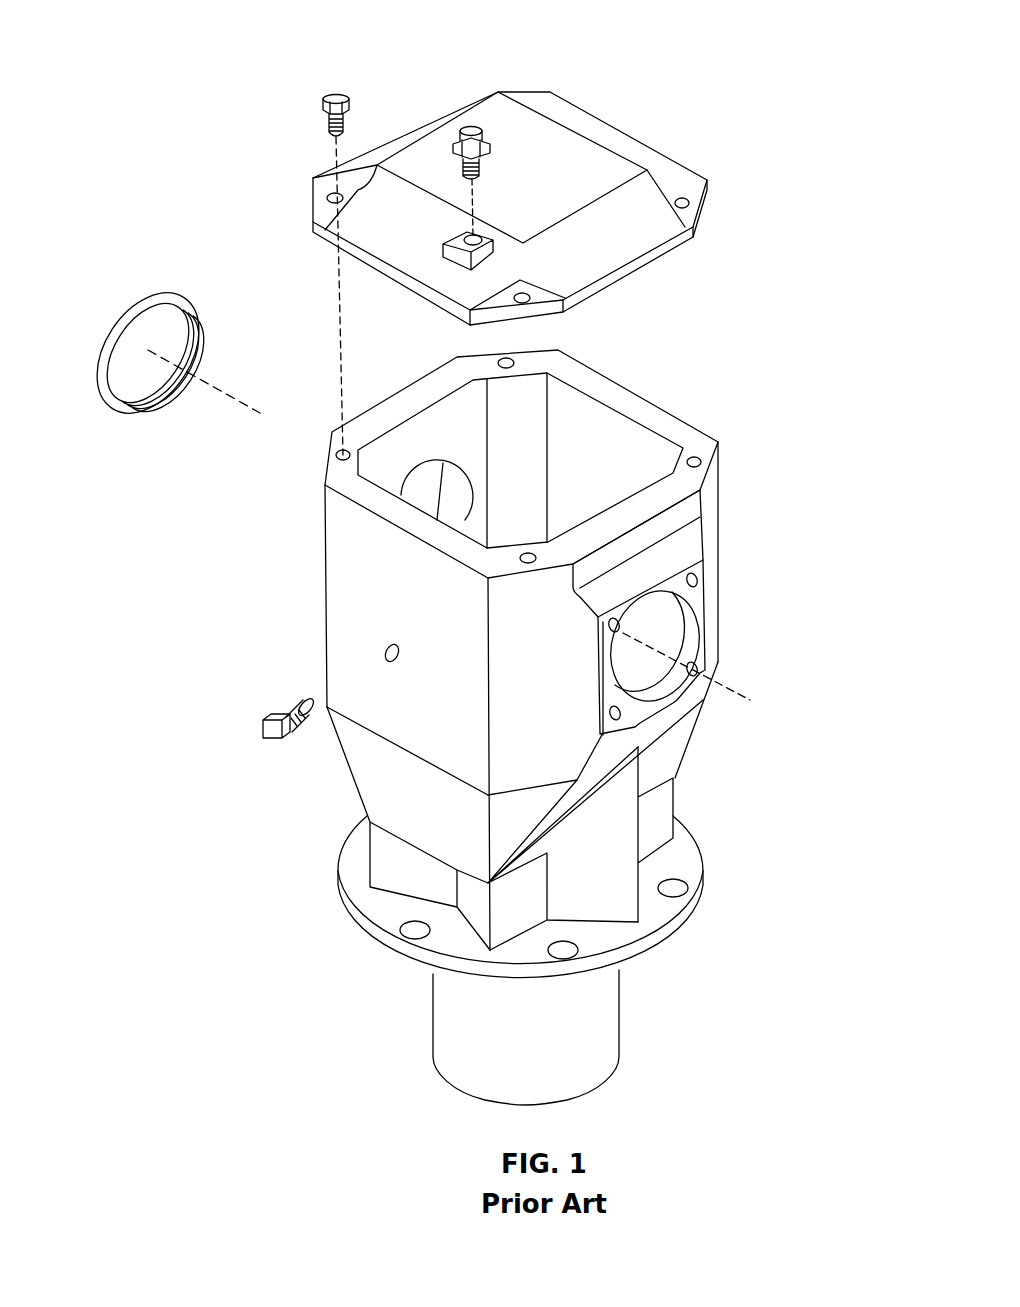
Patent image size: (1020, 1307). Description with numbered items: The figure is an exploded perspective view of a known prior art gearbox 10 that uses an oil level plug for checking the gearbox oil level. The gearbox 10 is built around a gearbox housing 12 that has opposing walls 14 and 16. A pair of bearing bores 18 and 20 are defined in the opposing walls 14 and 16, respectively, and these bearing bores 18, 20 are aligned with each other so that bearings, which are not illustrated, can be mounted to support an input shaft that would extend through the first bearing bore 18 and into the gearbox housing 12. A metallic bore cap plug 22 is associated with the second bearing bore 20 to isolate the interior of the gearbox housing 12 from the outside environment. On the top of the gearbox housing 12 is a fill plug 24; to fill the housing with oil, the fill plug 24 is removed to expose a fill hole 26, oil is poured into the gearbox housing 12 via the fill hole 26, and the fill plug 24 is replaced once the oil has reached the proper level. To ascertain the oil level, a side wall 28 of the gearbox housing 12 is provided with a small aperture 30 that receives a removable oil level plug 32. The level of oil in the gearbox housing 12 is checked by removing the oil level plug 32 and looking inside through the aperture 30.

The gearbox 10 is at (765, 849).
The gearbox housing 12 is at (698, 417).
The opposing wall 14 is at (561, 691).
The opposing wall 16 is at (400, 440).
The bearing bore 18 is at (705, 562).
The bearing bore 20 is at (355, 469).
The bore cap plug 22 is at (135, 382).
The fill plug 24 is at (487, 130).
The fill hole 26 is at (467, 232).
The side wall 28 is at (415, 610).
The aperture 30 is at (383, 650).
The oil level plug 32 is at (270, 747).